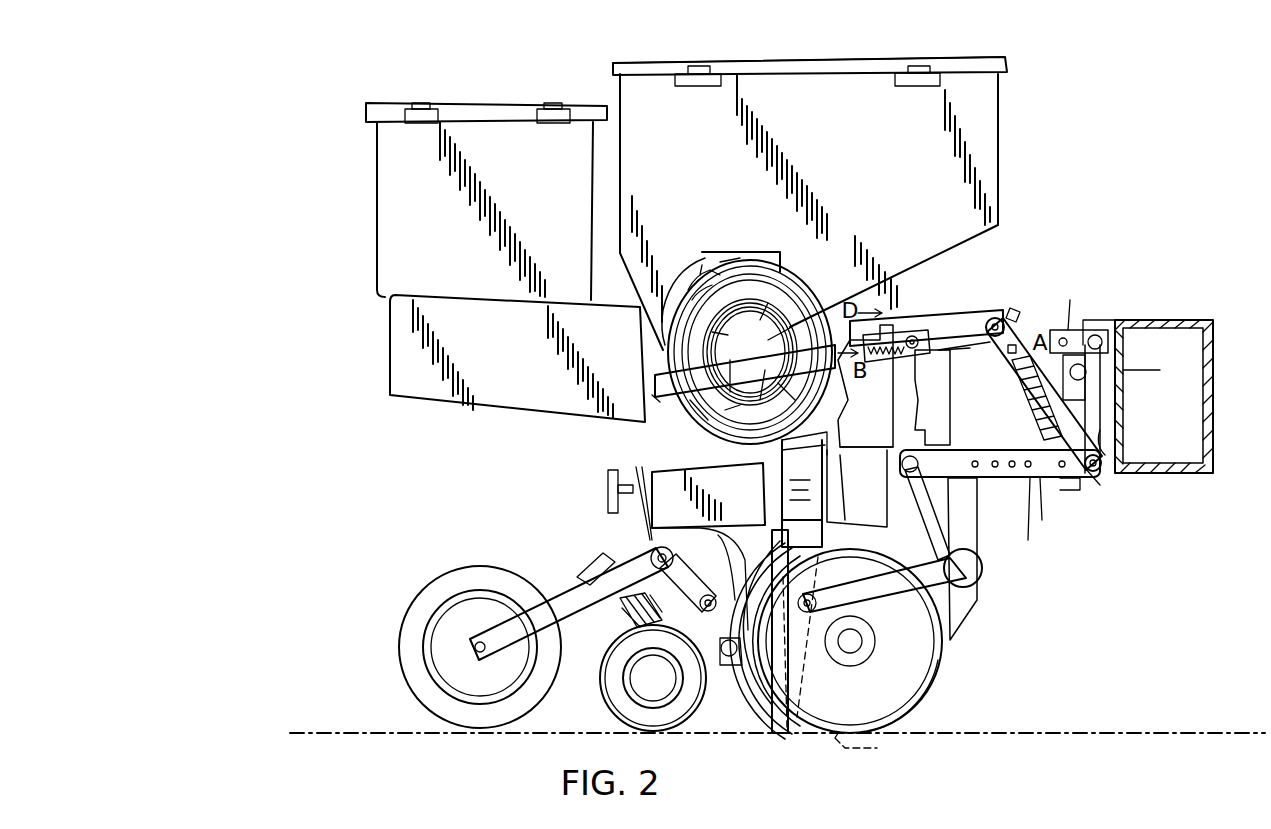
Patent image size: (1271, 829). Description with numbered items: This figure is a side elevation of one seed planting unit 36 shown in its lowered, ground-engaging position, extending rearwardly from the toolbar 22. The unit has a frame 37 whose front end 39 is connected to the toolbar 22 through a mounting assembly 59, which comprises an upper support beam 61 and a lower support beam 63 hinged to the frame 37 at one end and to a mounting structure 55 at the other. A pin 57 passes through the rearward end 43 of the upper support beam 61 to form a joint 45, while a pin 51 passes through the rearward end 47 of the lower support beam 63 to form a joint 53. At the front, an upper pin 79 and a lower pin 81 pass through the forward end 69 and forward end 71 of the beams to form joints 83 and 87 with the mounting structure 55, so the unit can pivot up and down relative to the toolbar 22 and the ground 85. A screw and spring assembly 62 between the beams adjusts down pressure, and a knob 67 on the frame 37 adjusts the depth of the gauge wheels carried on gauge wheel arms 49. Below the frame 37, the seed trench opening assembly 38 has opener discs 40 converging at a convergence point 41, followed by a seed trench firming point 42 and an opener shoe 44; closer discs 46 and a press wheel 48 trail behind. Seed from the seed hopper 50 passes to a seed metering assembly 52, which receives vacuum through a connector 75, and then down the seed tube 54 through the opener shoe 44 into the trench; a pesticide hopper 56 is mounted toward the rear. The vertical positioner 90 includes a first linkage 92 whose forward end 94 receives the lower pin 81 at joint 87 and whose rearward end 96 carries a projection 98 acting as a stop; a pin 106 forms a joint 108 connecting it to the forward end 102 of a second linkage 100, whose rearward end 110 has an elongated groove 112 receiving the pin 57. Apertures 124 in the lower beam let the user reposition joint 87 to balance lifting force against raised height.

The toolbar 22 is at (1201, 312).
The seed planting unit 36 is at (1125, 90).
The frame 37 is at (685, 529).
The seed trench opening assembly 38 is at (945, 688).
The front end 39 is at (920, 426).
The seed trench opener discs 40 is at (930, 650).
The convergence point 41 is at (912, 708).
The seed trench firming point 42 is at (843, 659).
The rearward ends 43 is at (890, 415).
The opener shoe 44 is at (778, 738).
The joint 45 is at (903, 317).
The seed trench closer discs 46 is at (620, 705).
The rearward ends 47 is at (915, 480).
The press wheel 48 is at (420, 612).
The gauge wheel arms 49 is at (880, 615).
The seed hopper 50 is at (642, 123).
The pin 51 is at (890, 580).
The seed metering assembly 52 is at (653, 344).
The joint 53 is at (880, 470).
The seed tube 54 is at (765, 496).
The mounting structure 55 is at (1100, 320).
The pesticide hopper 56 is at (524, 193).
The pin 57 is at (912, 335).
The mounting assembly 59 is at (1071, 280).
The upper support beams 61 is at (1089, 305).
The screw and spring assemblies 62 is at (1040, 495).
The lower support beams 63 is at (1042, 525).
The knob 67 is at (606, 488).
The forward end 69 is at (1125, 370).
The forward end 71 is at (1070, 490).
The connector 75 is at (658, 370).
The upper pin 79 is at (1098, 322).
The lower pin 81 is at (1103, 472).
The joint 83 is at (1070, 377).
The ground 85 is at (1055, 735).
The joint 87 is at (1100, 482).
The vertical positioner 90 is at (1013, 308).
The first linkage 92 is at (1105, 410).
The forward end 94 is at (1110, 445).
The rearward end 96 is at (1015, 325).
The projection 98 is at (1024, 400).
The second linkage 100 is at (955, 330).
The forward end 102 is at (962, 335).
The pin 106 is at (1008, 300).
The joint 108 is at (990, 345).
The rearward end 110 is at (892, 404).
The elongated groove 112 is at (666, 414).
The apertures 124 is at (1000, 480).